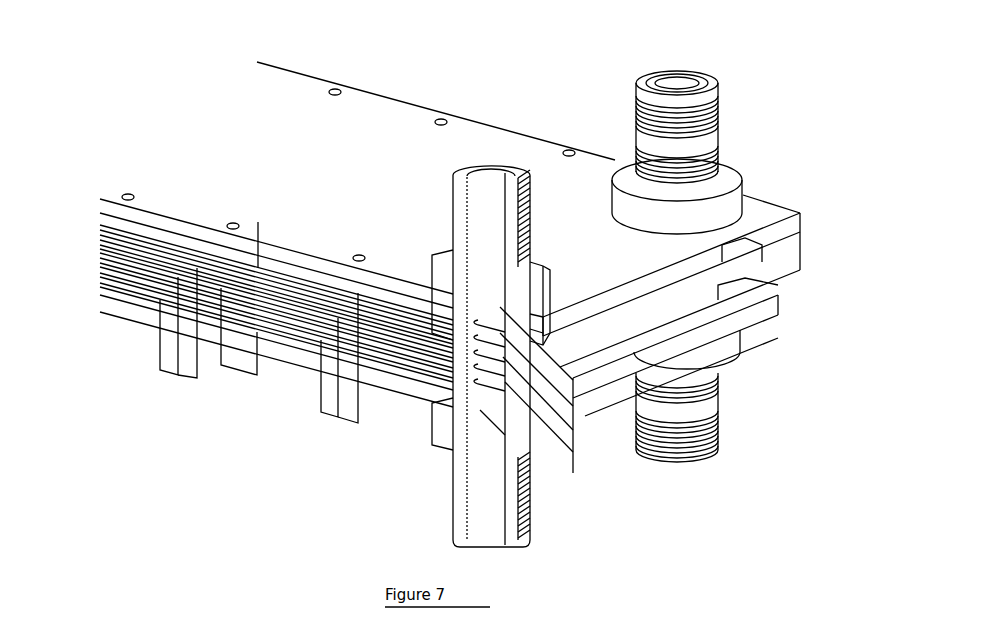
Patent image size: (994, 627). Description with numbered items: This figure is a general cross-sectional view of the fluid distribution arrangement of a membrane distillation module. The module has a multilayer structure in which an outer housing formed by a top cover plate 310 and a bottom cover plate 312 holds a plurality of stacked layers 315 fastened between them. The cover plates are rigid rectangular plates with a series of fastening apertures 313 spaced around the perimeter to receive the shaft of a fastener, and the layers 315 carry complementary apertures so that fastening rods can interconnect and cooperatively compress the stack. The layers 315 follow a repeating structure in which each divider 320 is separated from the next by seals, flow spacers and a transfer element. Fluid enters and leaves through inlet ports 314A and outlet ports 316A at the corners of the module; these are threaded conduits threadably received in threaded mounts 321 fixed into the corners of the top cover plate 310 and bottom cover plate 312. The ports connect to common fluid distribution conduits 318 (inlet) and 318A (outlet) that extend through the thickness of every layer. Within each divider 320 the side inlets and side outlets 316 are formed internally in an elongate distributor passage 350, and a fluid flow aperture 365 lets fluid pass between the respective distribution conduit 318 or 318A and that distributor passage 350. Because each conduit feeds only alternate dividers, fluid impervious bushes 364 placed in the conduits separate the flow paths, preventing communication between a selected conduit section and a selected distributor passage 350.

The top cover plate 310 is at (390, 128).
The bottom cover plate 312 is at (120, 326).
The fastening apertures 313 is at (334, 89).
The inlet ports 314A is at (496, 160).
The layers 315 is at (270, 299).
The side outlets 316 is at (259, 235).
The outlet ports 316A is at (677, 66).
The fluid distribution conduit (inlet) 318 is at (531, 218).
The fluid distribution conduit (outlet) 318A is at (719, 122).
The divider 320 is at (467, 214).
The threaded mounts 321 is at (728, 186).
The distributor passage 350 is at (259, 354).
The bushes 364 is at (553, 379).
The fluid flow aperture 365 is at (487, 430).